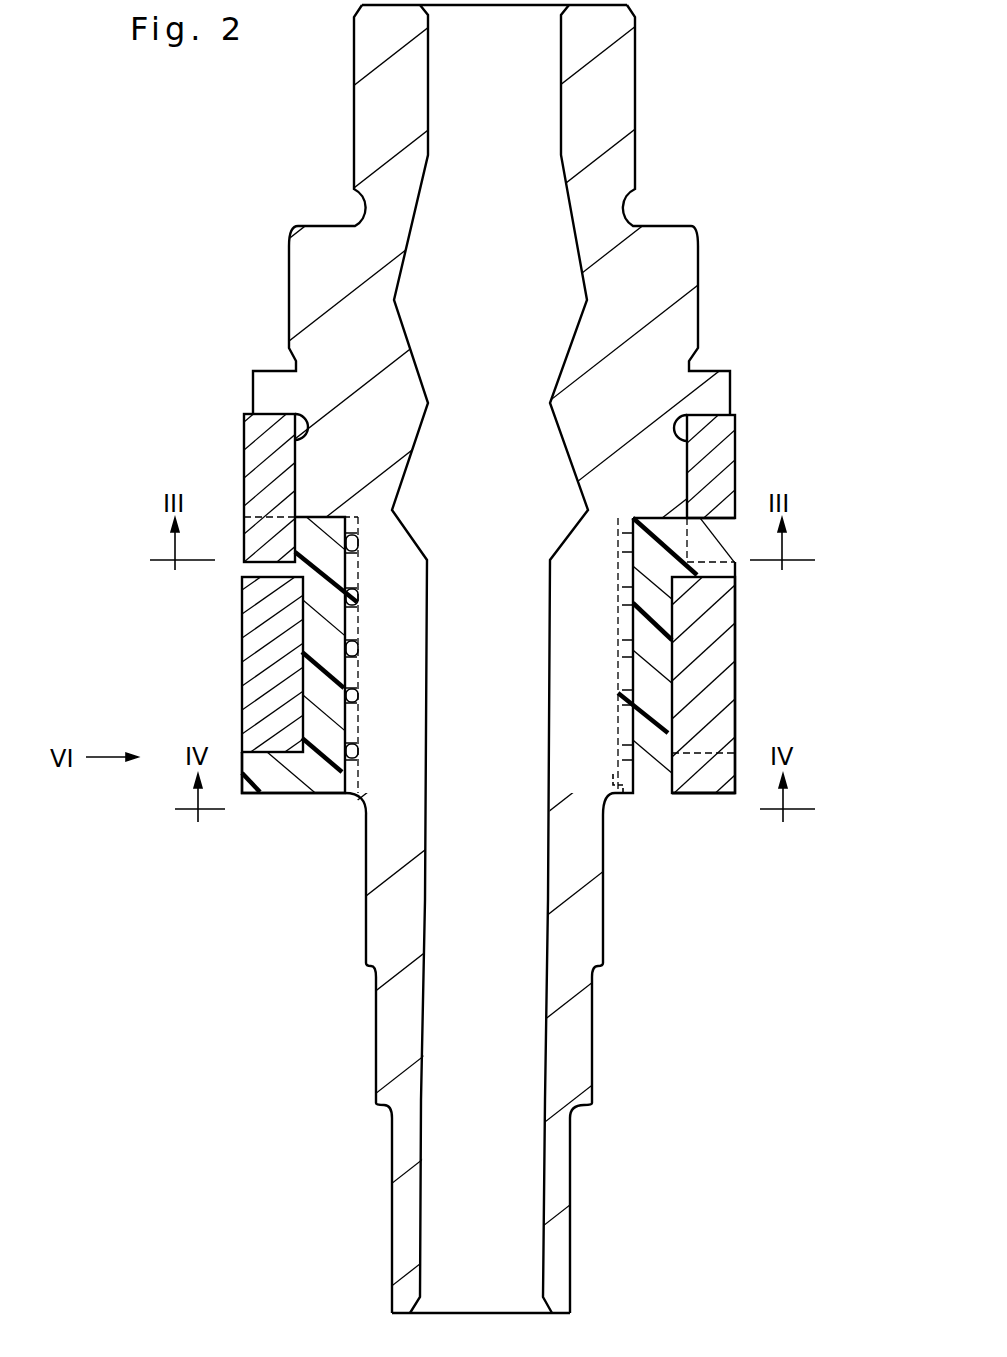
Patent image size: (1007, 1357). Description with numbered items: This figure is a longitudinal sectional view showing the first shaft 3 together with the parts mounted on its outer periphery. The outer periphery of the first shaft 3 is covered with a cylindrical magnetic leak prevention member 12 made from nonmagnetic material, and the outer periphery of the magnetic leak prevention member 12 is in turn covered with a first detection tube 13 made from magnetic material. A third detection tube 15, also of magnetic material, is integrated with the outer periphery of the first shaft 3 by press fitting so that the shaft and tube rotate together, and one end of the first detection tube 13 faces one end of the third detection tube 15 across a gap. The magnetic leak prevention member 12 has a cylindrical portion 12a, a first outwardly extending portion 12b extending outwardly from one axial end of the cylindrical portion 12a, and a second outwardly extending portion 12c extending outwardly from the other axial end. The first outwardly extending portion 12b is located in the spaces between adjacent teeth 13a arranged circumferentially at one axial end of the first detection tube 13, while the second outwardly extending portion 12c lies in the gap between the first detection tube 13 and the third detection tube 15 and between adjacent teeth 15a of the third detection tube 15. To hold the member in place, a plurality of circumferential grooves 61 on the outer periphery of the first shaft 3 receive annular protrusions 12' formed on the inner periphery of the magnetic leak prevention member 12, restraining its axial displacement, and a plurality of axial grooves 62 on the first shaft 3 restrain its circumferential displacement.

The first shaft 3 is at (646, 370).
The third detection tube 15 is at (723, 452).
The teeth 15a is at (258, 552).
The cylindrical portion 12a is at (318, 635).
The first outwardly extending portion 12b is at (259, 772).
The magnetic leak prevention member 12 is at (535, 650).
The second outwardly extending portion 12c is at (735, 563).
The first detection tube 13 is at (712, 658).
The teeth 13a is at (700, 794).
The circumferential grooves 61 is at (358, 547).
The annular protrusions 12' is at (469, 655).
The axial grooves 62 is at (623, 793).